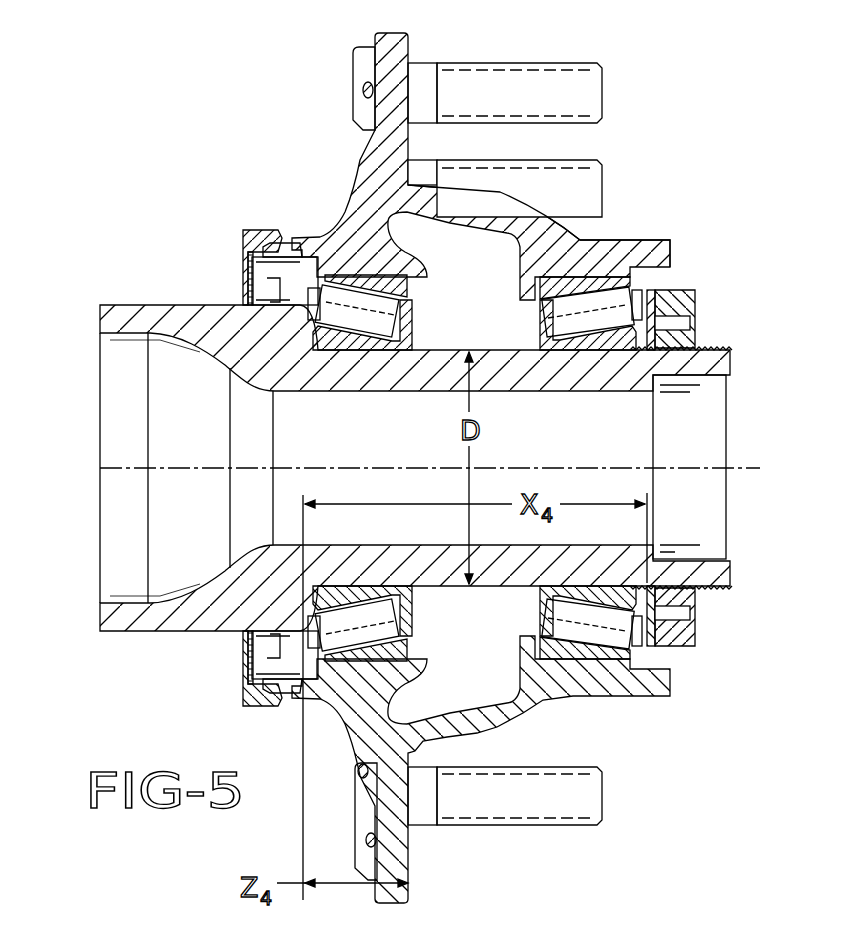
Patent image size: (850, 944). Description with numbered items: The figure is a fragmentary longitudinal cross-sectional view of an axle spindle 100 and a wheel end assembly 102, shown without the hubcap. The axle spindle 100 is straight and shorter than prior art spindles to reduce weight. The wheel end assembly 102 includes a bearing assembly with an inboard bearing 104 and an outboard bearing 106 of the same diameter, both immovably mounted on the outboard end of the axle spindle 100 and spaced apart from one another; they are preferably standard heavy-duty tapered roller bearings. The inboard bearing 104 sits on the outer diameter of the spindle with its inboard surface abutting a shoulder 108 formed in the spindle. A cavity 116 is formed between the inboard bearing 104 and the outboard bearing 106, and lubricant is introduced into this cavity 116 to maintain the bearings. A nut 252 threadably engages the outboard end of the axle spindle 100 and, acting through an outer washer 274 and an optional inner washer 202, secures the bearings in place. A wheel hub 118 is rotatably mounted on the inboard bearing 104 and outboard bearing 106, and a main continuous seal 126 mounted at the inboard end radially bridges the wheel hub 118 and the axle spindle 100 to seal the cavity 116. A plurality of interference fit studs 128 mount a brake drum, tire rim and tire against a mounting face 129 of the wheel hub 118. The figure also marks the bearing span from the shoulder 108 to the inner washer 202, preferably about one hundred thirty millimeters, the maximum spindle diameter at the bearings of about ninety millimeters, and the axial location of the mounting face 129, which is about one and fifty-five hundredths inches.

The axle spindle 100 is at (157, 302).
The wheel end assembly 102 is at (519, 468).
The inboard bearing 104 is at (362, 468).
The outboard bearing 106 is at (597, 341).
The shoulder 108 is at (313, 342).
The cavity 116 is at (485, 690).
The wheel hub 118 is at (628, 240).
The main continuous seal 126 is at (245, 665).
The interference fit studs 128 is at (530, 63).
The mounting face 129 is at (412, 850).
The inner washer 202 is at (736, 440).
The nut 252 is at (696, 297).
The outer washer 274 is at (698, 332).